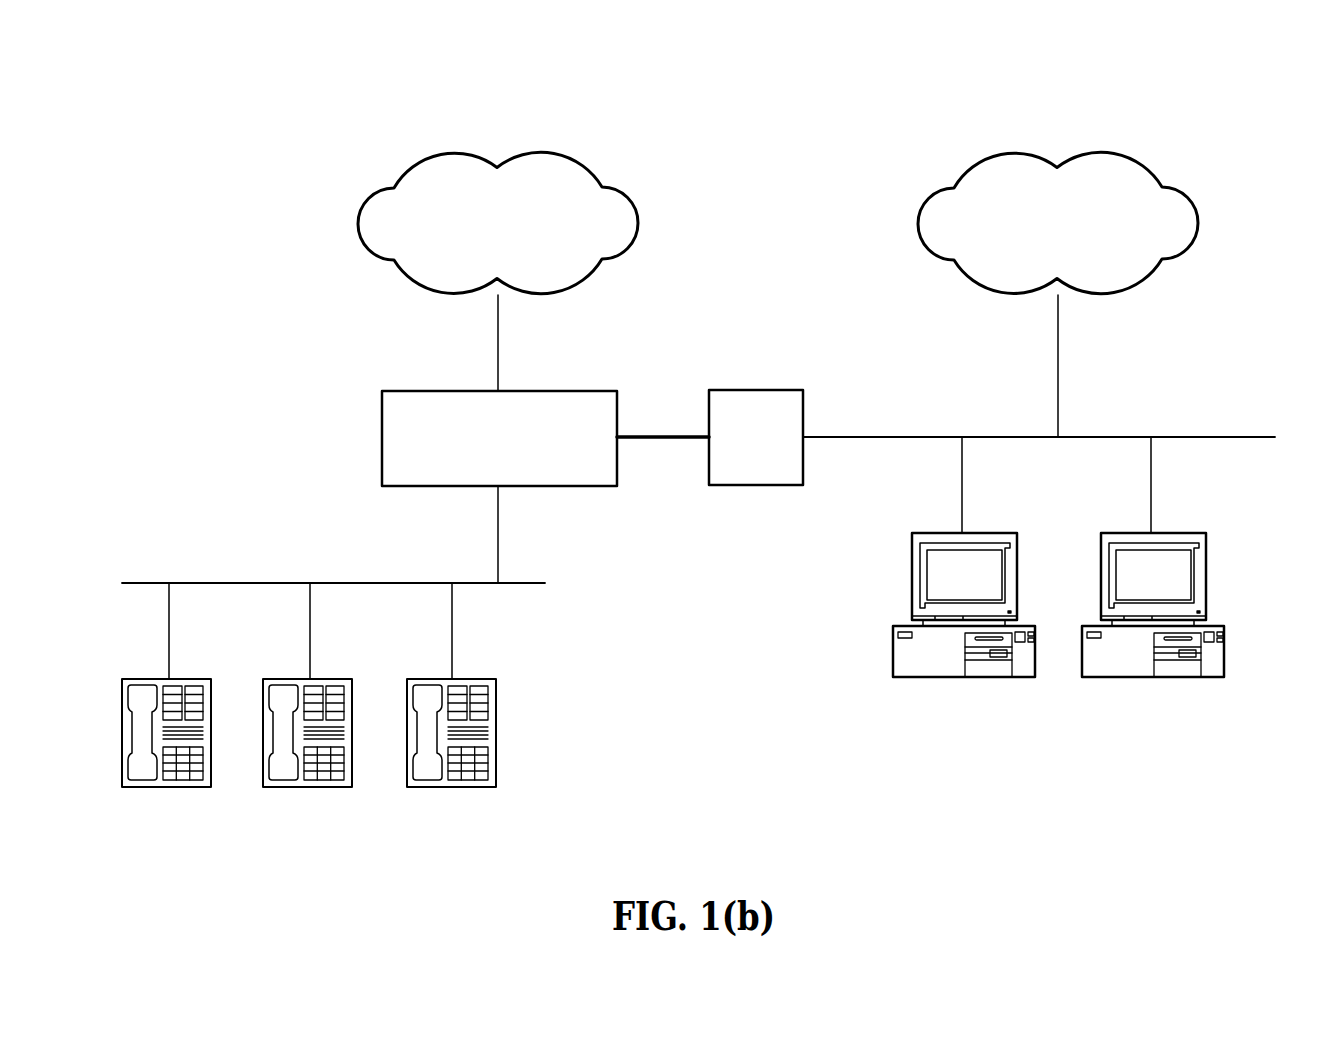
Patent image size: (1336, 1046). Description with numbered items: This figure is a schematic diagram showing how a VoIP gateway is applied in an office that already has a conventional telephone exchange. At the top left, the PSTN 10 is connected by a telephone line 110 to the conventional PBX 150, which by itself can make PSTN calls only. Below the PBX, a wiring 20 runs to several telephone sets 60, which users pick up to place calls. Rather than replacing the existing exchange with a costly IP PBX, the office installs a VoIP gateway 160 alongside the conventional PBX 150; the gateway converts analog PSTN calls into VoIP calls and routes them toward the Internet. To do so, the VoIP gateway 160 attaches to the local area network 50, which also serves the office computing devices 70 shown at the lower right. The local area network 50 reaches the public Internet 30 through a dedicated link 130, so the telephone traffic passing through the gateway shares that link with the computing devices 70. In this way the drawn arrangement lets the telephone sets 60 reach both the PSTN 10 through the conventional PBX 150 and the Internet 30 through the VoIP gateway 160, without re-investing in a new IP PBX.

The PSTN 10 is at (453, 152).
The Internet 30 is at (1002, 150).
The telephone line 110 is at (498, 372).
The conventional PBX 150 is at (432, 391).
The VoIP gateway 160 is at (755, 390).
The local area network 50 is at (1225, 437).
The dedicated link 130 is at (1058, 383).
The wiring 20 is at (188, 583).
The telephone sets 60 is at (495, 735).
The computing devices 70 is at (1205, 578).